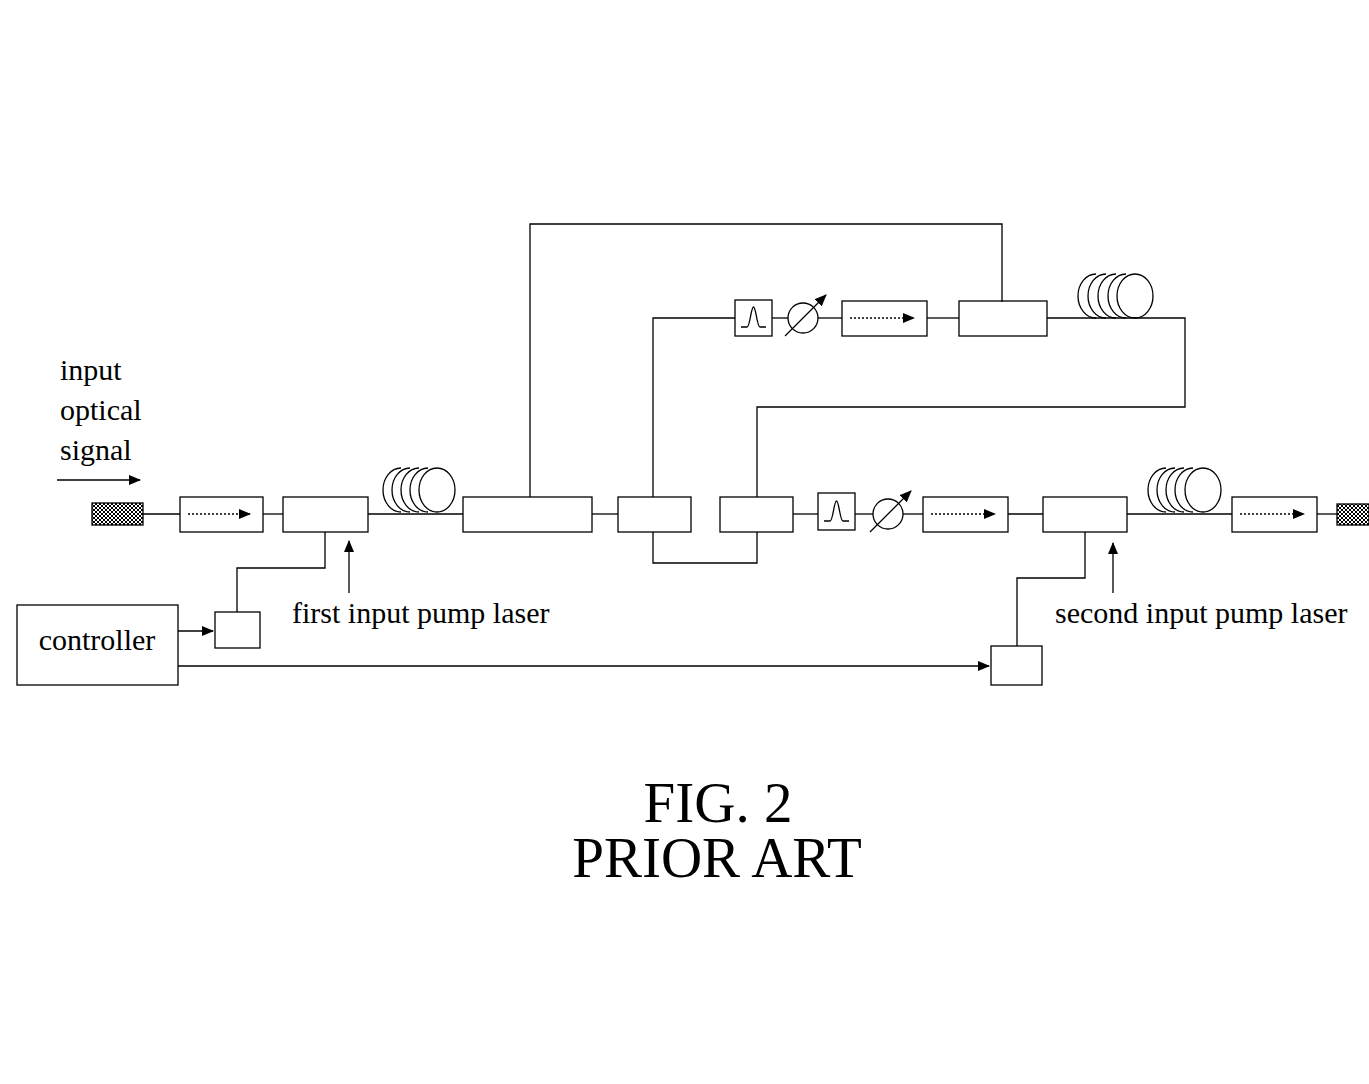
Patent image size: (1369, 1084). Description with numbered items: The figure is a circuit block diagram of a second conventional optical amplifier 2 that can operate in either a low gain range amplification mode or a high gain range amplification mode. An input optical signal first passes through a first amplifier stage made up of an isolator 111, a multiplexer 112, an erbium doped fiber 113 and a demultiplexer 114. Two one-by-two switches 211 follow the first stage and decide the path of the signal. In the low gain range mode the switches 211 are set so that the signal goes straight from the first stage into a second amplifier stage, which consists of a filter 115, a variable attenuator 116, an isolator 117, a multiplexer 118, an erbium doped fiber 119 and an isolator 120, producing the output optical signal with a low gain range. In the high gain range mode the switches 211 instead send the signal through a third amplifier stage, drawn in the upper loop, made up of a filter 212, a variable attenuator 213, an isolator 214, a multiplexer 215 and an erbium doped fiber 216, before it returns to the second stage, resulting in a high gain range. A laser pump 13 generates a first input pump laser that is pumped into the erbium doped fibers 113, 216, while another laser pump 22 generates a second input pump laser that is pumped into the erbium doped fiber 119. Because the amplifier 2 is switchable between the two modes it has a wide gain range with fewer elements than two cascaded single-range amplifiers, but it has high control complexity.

The second conventional optical amplifier 2 is at (571, 214).
The laser pump 13 is at (228, 612).
The laser pump 22 is at (1005, 646).
The isolator 111 is at (224, 497).
The multiplexer 112 is at (325, 497).
The erbium doped fiber 113 is at (418, 468).
The demultiplexer 114 is at (495, 497).
The filter 115 is at (838, 493).
The variable attenuator 116 is at (888, 498).
The isolator 117 is at (965, 497).
The multiplexer 118 is at (1085, 497).
The erbium doped fiber 119 is at (1195, 468).
The isolator 120 is at (1277, 497).
The 1×2 switch 211 is at (623, 497).
The filter 212 is at (750, 300).
The variable attenuator 213 is at (803, 303).
The isolator 214 is at (890, 301).
The multiplexer 215 is at (1020, 301).
The erbium doped fiber 216 is at (1120, 274).